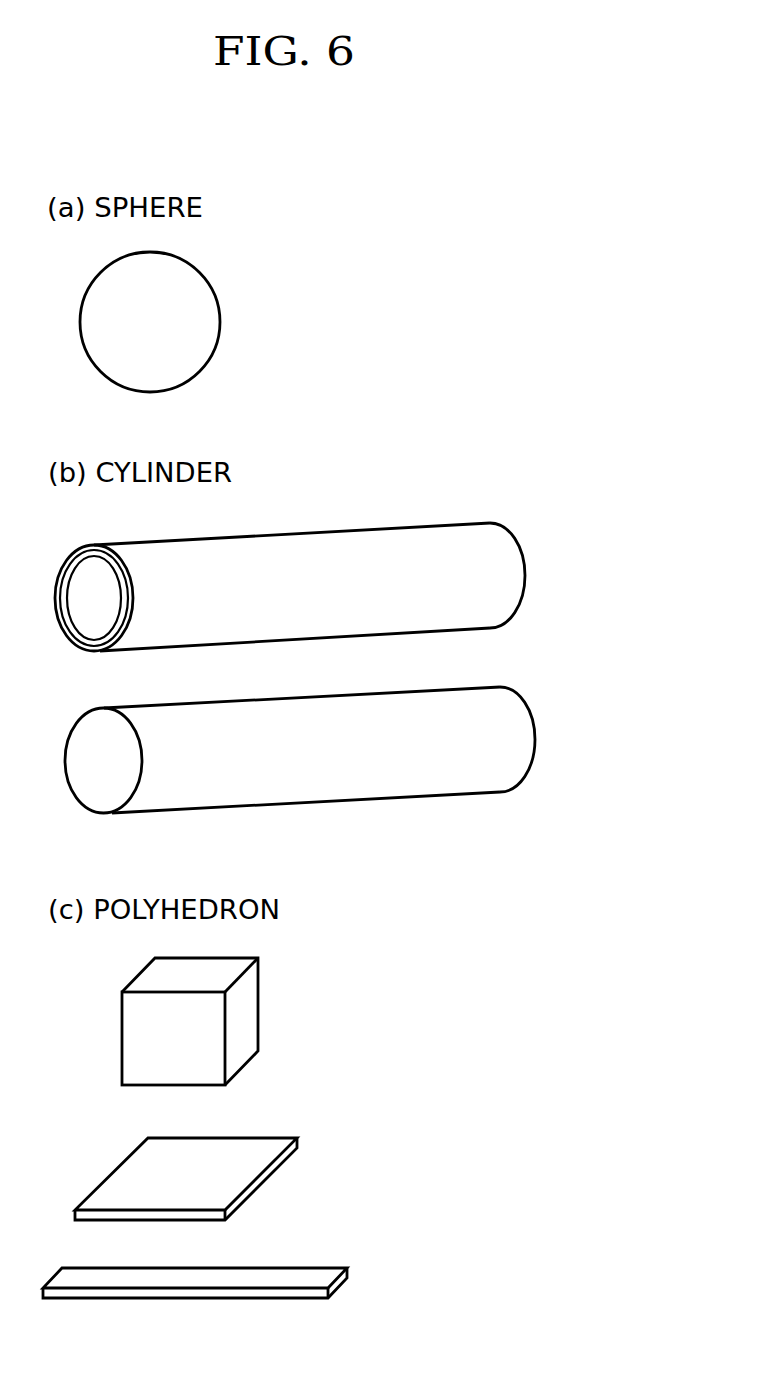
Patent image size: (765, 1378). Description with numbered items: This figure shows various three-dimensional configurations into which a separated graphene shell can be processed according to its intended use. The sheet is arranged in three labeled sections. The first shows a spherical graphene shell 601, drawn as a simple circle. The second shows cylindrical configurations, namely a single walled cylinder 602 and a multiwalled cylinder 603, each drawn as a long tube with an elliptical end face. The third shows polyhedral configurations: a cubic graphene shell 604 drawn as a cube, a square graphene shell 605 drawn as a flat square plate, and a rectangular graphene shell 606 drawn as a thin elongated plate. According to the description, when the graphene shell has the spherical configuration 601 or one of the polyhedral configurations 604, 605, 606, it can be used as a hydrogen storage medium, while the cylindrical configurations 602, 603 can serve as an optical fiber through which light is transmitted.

The spherical graphene shell 601 is at (195, 322).
The single walled cylinder 602 is at (332, 587).
The multiwalled cylinder 603 is at (343, 750).
The cubic graphene shell 604 is at (279, 1021).
The square graphene shell 605 is at (256, 1179).
The rectangular graphene shell 606 is at (240, 1281).